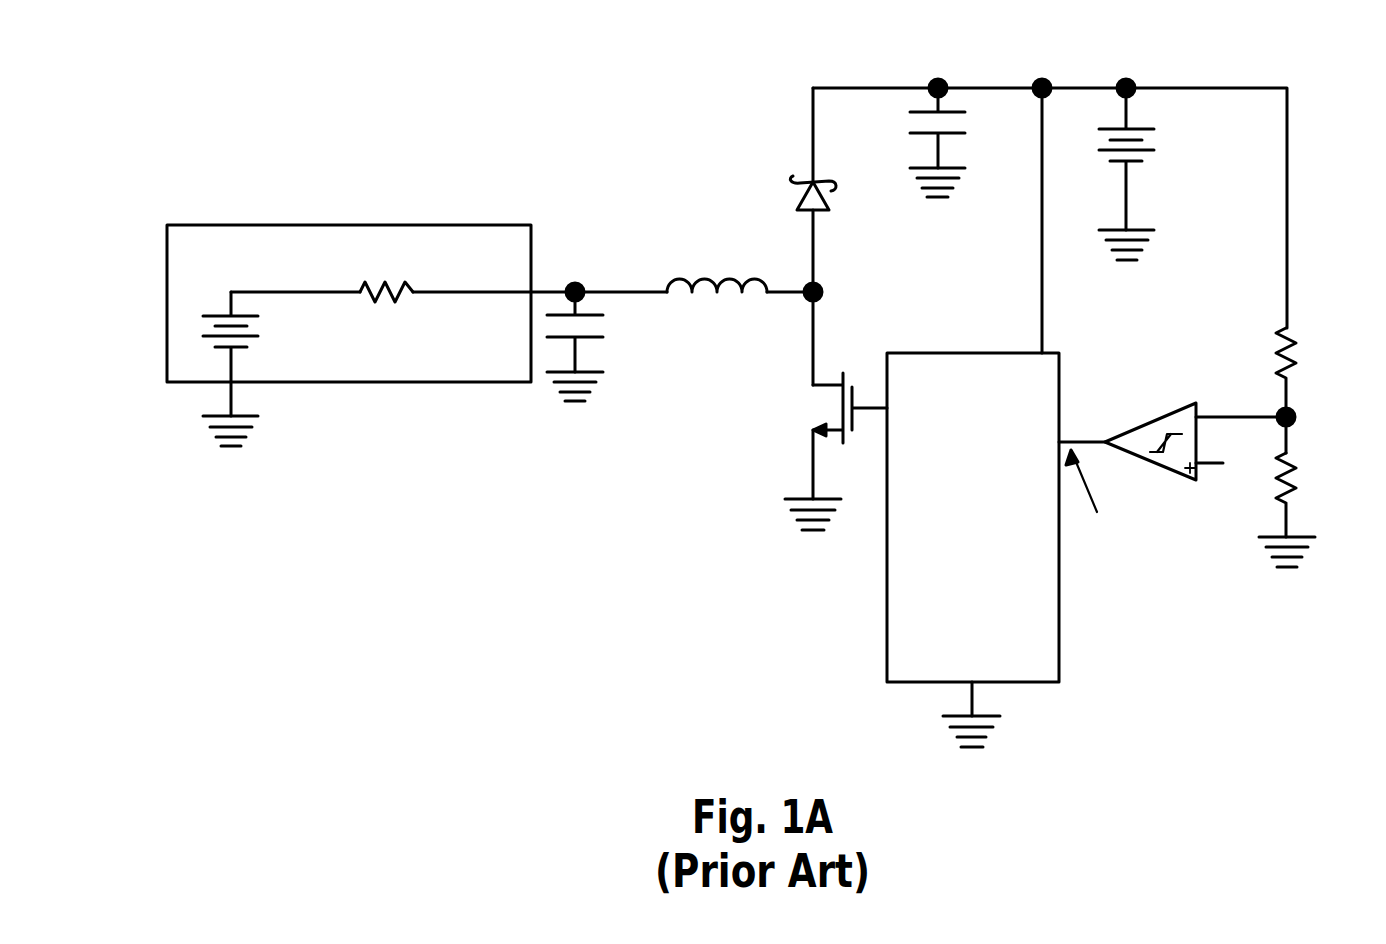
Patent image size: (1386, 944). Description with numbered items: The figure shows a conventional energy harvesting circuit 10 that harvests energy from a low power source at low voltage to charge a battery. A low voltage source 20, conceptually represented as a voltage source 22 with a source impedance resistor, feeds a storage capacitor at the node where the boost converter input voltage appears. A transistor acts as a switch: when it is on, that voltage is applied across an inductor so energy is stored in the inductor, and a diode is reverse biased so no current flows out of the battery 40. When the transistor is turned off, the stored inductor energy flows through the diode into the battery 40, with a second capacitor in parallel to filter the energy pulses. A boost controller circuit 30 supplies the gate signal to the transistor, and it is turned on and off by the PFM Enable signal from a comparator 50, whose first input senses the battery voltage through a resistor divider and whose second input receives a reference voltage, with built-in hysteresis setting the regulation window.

The energy harvesting circuit 10 is at (261, 112).
The low voltage source 20 is at (371, 225).
The voltage source 22 is at (198, 326).
The boost controller circuit 30 is at (922, 353).
The battery 40 is at (1162, 150).
The comparator 50 is at (1160, 410).